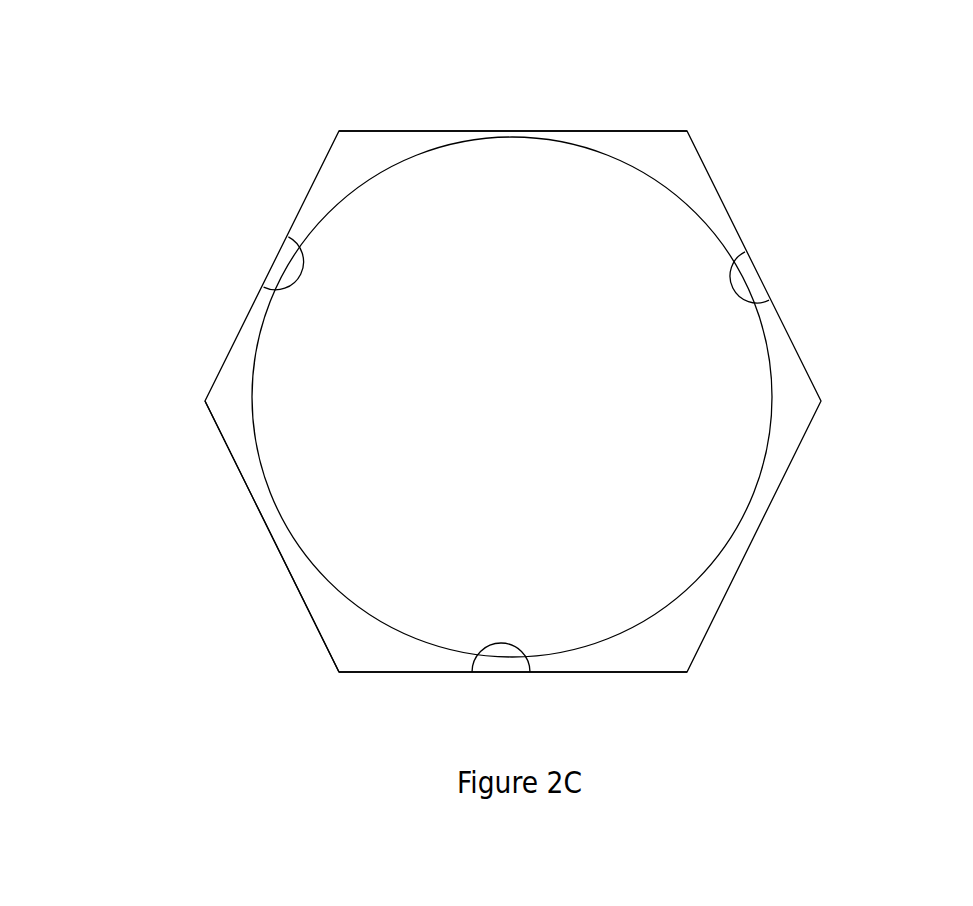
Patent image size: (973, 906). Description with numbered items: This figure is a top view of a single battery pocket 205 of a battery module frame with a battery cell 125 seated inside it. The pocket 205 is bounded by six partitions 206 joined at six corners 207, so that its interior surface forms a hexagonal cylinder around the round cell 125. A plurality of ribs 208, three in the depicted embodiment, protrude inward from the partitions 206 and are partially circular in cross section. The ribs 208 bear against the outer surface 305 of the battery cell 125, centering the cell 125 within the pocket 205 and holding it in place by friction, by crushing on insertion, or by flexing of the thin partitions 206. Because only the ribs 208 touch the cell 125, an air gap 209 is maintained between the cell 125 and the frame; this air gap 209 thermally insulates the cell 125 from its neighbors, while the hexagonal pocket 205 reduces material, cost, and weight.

The battery pocket 205 is at (815, 77).
The battery cell 125 is at (520, 188).
The partition 206 is at (263, 518).
The corner 207 is at (338, 128).
The rib 208 is at (277, 257).
The air gap 209 is at (688, 642).
The outer surface 305 is at (772, 359).